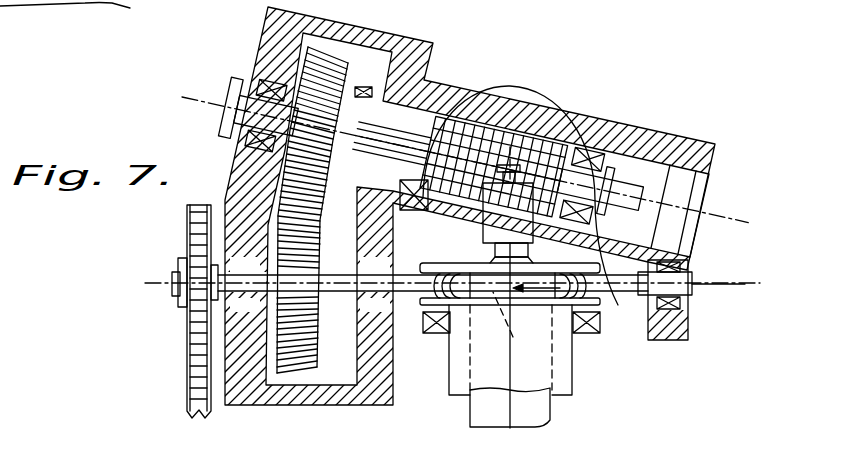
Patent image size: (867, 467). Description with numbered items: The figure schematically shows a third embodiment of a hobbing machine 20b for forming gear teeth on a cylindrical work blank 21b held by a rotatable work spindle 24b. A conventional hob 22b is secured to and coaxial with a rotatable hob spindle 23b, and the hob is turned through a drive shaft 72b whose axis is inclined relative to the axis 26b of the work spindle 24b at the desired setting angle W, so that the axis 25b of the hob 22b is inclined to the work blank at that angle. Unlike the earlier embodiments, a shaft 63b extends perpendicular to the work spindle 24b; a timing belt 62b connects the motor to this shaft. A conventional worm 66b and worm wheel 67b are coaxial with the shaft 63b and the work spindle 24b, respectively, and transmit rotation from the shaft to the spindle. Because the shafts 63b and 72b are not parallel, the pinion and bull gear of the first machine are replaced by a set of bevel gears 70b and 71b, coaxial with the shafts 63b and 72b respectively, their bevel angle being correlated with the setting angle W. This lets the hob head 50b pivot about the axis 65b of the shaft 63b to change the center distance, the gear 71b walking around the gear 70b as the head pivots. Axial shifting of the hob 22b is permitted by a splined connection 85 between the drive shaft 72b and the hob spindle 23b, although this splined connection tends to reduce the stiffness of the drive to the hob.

The hobbing machine 20b is at (685, 126).
The work blank 21b is at (525, 185).
The hob 22b is at (510, 130).
The hob spindle 23b is at (445, 108).
The work spindle 24b is at (493, 260).
The axis of the hob 25b is at (717, 213).
The axis of the work spindle 26b is at (546, 397).
The hob head 50b is at (647, 121).
The timing belt 62b is at (197, 343).
The shaft 63b is at (232, 288).
The axis of the shaft 65b is at (718, 283).
The worm 66b is at (529, 321).
The worm wheel 67b is at (482, 306).
The bevel gear 70b is at (277, 255).
The bevel gear 71b is at (307, 82).
The drive shaft 72b is at (240, 106).
The splined connection 85 is at (410, 95).
The setting angle W is at (529, 212).